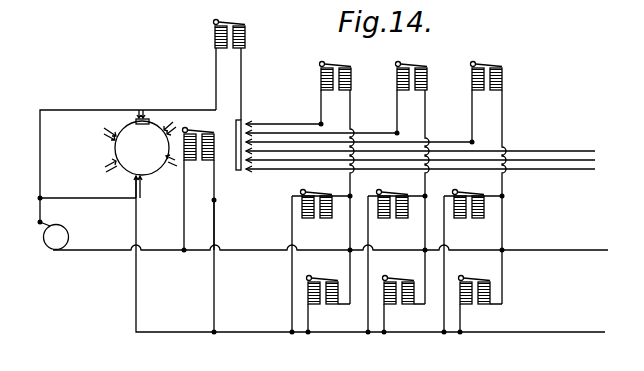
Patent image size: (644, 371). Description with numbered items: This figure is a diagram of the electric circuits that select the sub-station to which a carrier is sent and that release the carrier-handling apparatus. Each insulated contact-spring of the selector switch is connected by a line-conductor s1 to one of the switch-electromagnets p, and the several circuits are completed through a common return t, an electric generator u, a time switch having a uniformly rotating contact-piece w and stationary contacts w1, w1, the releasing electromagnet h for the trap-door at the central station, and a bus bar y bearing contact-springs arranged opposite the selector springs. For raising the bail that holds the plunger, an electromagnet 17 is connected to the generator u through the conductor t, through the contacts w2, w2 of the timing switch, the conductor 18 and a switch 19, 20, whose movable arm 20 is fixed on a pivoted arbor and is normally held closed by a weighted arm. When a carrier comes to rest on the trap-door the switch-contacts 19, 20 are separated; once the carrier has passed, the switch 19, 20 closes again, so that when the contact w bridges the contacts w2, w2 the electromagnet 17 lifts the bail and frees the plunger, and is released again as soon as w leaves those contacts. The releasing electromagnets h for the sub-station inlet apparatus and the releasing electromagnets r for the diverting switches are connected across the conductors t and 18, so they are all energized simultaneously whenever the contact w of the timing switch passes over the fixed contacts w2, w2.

The releasing electromagnet r is at (76, 110).
The rotating contact-piece w is at (142, 147).
The stationary contacts w1 is at (189, 106).
The contacts of the timing switch w2 is at (150, 192).
The electric generator u is at (60, 237).
The releasing electromagnet h is at (243, 36).
The bus bar y is at (229, 144).
The line-conductor s1 is at (292, 124).
The switch-electromagnet p is at (351, 84).
The common return t is at (257, 250).
The electromagnet 17 is at (188, 162).
The conductor 18 is at (137, 233).
The switch contact 19 is at (216, 205).
The movable switch arm 20 is at (212, 200).